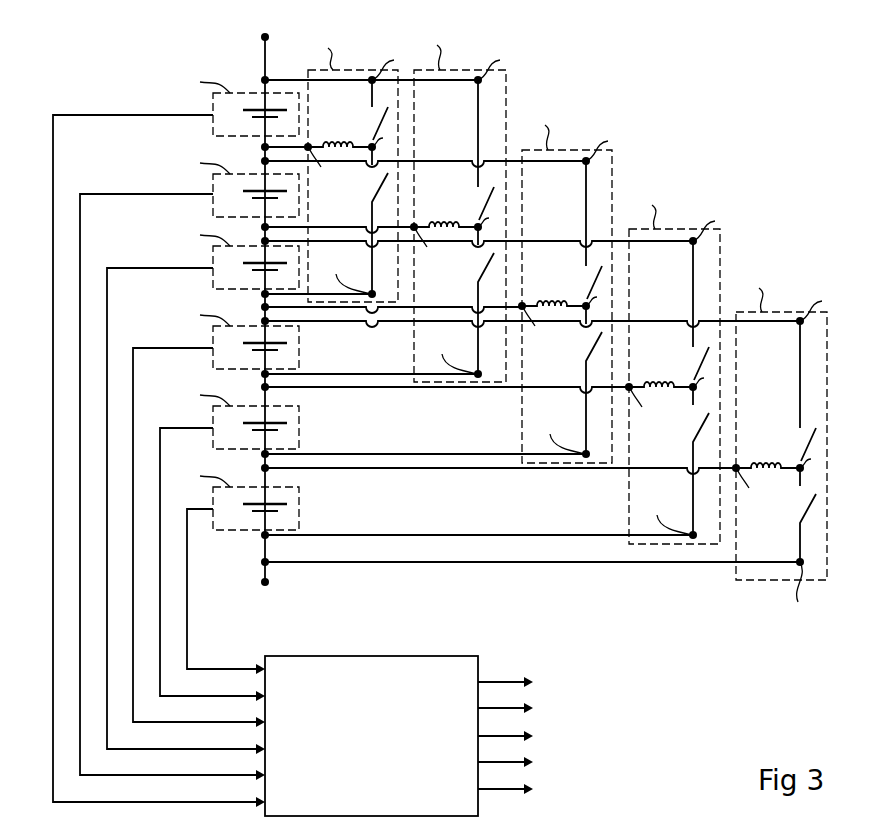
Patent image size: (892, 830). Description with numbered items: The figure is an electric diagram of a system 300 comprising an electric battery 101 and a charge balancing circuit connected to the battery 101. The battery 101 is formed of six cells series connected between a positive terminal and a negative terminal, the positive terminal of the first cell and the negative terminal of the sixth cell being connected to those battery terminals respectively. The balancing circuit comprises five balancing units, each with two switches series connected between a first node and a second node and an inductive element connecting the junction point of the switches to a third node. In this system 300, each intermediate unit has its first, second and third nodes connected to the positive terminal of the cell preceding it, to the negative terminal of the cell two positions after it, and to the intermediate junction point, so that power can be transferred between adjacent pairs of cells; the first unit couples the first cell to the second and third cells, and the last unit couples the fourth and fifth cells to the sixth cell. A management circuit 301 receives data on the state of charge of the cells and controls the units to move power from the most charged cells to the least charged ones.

The electric battery 101 is at (262, 52).
The system 300 is at (710, 95).
The management circuit 301 is at (374, 668).